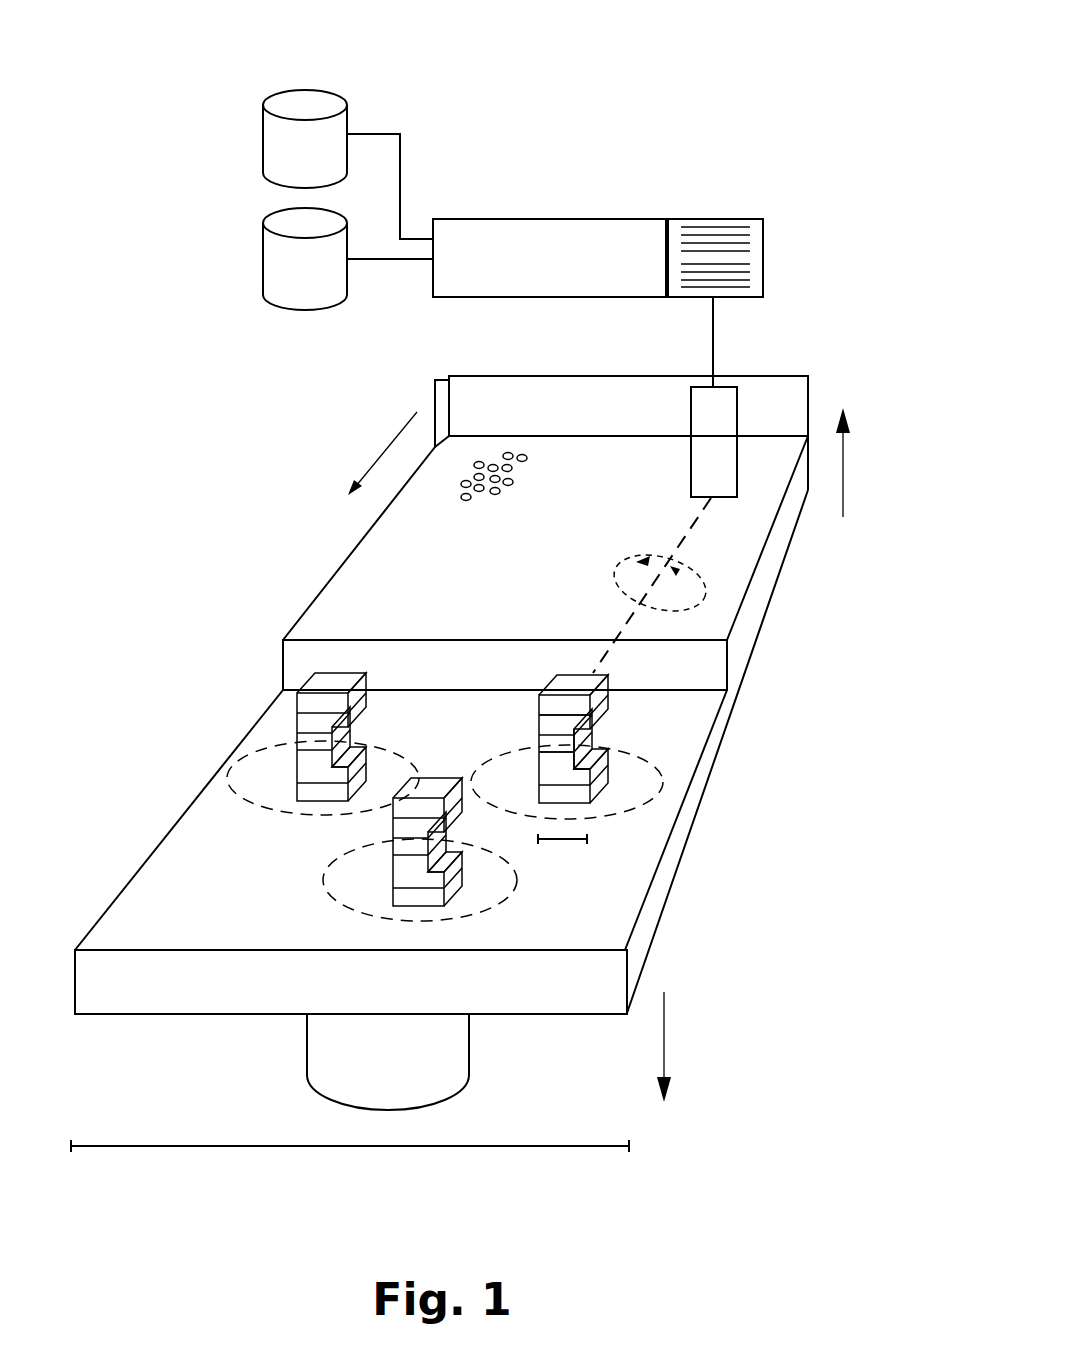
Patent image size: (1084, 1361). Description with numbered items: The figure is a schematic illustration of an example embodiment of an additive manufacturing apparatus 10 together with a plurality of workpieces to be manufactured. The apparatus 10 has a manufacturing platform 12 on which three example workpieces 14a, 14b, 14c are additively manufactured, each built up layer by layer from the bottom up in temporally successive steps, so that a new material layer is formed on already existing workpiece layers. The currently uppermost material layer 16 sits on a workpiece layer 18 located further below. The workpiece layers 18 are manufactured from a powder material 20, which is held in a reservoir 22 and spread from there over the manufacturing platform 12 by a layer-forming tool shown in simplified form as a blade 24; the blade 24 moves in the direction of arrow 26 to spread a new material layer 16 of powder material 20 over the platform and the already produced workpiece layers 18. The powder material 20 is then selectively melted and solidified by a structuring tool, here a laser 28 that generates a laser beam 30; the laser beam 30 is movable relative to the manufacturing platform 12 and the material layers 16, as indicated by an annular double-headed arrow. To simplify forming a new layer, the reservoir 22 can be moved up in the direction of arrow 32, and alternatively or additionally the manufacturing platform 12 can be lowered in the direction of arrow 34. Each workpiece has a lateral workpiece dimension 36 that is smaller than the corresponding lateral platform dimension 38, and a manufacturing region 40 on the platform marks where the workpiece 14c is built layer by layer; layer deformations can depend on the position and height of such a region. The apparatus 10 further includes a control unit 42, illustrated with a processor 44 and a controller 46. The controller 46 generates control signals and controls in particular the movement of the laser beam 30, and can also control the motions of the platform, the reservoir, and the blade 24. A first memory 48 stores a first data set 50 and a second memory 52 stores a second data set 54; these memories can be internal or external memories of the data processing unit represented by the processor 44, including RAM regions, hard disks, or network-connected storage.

The apparatus 10 is at (270, 560).
The manufacturing platform 12 is at (138, 872).
The workpiece 14a is at (284, 715).
The workpiece 14b is at (380, 878).
The workpiece 14c is at (622, 761).
The material layer 16 is at (570, 690).
The workpiece layer 18 is at (539, 727).
The powder material 20 is at (512, 481).
The reservoir 22 is at (775, 570).
The blade 24 is at (780, 392).
The arrow 26 is at (390, 432).
The laser 28 is at (691, 405).
The laser beam 30 is at (666, 605).
The arrow 32 is at (843, 473).
The arrow 34 is at (664, 1038).
The lateral workpiece dimension 36 is at (560, 842).
The lateral platform dimension 38 is at (340, 1148).
The manufacturing region 40 is at (663, 782).
The control unit 42 is at (614, 157).
The processor 44 is at (487, 219).
The controller 46 is at (720, 219).
The first memory 48 is at (302, 88).
The first data set 50 is at (278, 145).
The second memory 52 is at (268, 210).
The second data set 54 is at (278, 265).